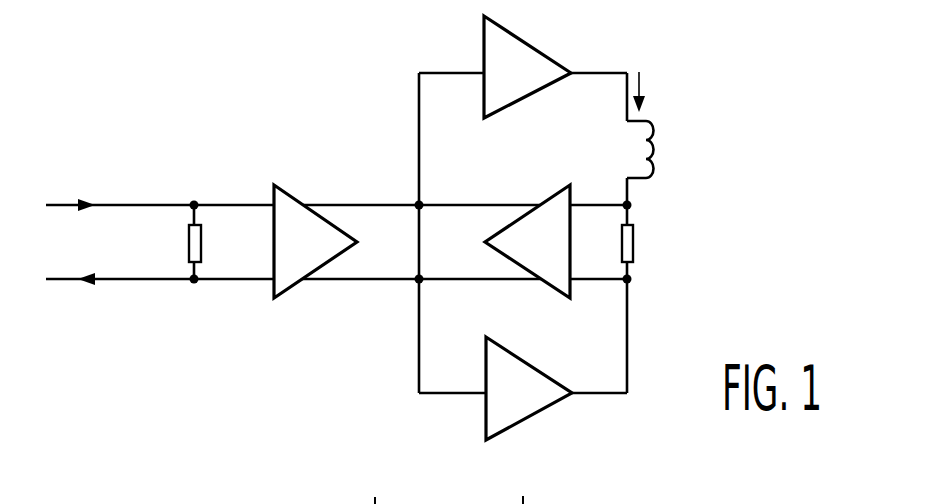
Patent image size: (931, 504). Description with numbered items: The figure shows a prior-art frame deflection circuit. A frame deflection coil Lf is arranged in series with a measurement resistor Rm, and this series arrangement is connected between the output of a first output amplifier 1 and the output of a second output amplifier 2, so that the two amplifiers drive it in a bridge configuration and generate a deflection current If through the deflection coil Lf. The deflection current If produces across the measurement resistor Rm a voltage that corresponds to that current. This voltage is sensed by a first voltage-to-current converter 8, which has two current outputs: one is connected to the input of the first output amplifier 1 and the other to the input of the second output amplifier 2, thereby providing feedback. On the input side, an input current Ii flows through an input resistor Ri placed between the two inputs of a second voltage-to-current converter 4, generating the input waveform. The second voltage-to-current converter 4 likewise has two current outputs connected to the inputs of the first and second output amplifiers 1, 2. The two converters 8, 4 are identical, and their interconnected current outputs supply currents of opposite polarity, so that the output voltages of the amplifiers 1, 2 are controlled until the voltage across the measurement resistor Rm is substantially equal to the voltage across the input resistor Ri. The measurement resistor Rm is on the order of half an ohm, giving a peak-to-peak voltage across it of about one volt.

The first output amplifier 1 is at (515, 50).
The second output amplifier 2 is at (527, 375).
The second voltage-to-current converter 4 is at (282, 198).
The first voltage-to-current converter 8 is at (557, 198).
The input resistor Ri is at (189, 240).
The measurement resistor Rm is at (634, 241).
The frame deflection coil Lf is at (652, 149).
The deflection current If is at (648, 89).
The input current Ii is at (86, 225).